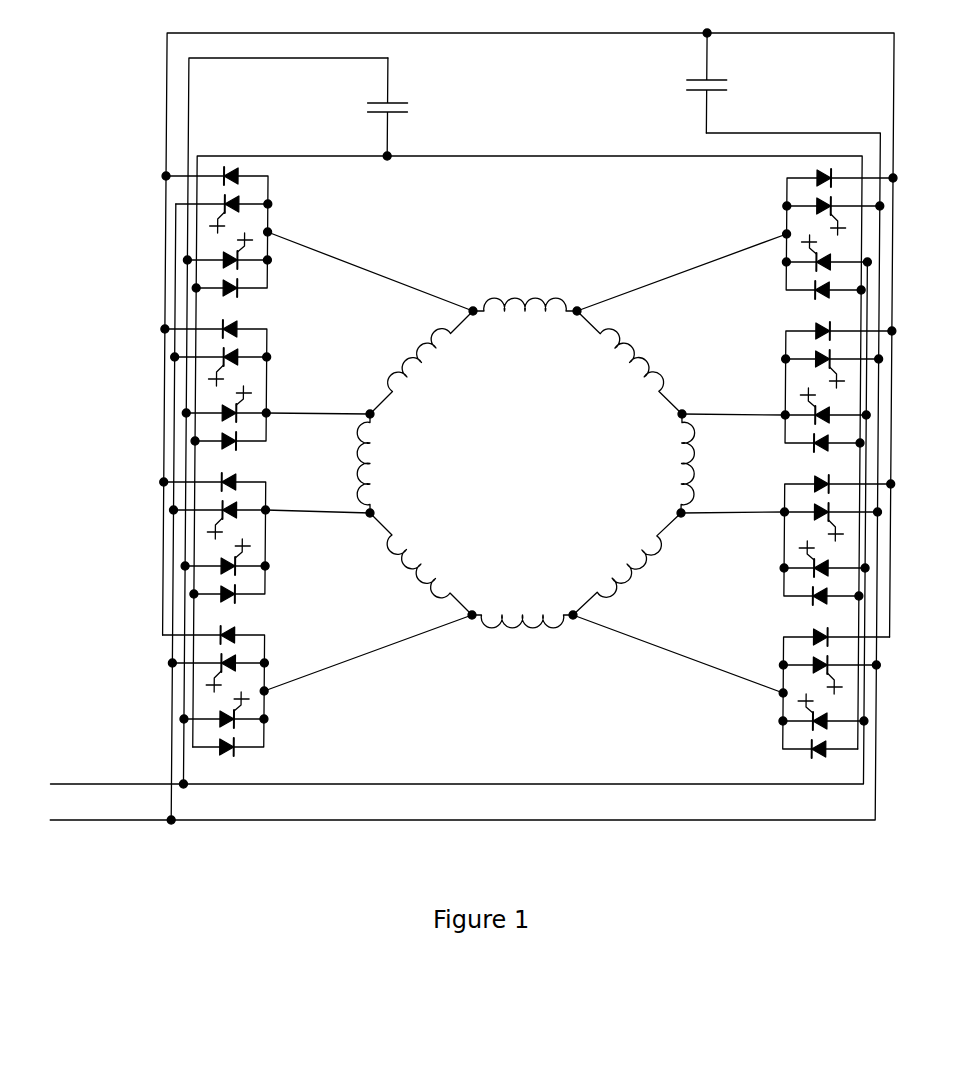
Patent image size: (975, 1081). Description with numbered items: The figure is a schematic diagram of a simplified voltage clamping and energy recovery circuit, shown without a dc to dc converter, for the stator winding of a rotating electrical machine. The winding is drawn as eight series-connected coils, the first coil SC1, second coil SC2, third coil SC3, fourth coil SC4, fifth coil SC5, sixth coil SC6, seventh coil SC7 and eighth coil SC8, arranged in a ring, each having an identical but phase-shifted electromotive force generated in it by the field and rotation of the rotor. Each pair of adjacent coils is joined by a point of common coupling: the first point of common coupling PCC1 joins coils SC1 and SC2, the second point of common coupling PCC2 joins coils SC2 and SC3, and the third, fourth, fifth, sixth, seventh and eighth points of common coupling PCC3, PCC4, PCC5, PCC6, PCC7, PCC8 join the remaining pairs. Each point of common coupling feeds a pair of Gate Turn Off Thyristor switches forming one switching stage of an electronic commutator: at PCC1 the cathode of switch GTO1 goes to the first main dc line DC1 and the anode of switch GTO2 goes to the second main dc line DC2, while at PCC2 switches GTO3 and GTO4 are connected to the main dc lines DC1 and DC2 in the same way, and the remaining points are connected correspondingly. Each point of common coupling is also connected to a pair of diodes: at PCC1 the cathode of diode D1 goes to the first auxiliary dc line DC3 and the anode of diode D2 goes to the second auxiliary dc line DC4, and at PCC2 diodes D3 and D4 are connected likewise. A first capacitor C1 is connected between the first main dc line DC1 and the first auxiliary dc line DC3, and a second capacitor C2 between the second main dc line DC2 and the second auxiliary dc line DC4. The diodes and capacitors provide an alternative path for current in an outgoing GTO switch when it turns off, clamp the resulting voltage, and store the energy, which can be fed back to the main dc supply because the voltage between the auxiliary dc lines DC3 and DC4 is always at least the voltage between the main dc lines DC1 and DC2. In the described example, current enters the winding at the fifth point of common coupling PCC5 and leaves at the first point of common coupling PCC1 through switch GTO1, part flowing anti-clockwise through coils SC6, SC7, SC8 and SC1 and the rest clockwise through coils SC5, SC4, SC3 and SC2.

The first main dc line DC1 is at (467, 480).
The second main dc line DC2 is at (461, 423).
The first auxiliary dc line DC3 is at (529, 333).
The second auxiliary dc line DC4 is at (527, 450).
The first capacitor C1 is at (715, 83).
The second capacitor C2 is at (396, 107).
The first coil SC1 is at (522, 604).
The second coil SC2 is at (626, 564).
The third coil SC3 is at (660, 463).
The fourth coil SC4 is at (629, 362).
The fifth coil SC5 is at (525, 319).
The sixth coil SC6 is at (422, 362).
The seventh coil SC7 is at (396, 463).
The eighth coil SC8 is at (423, 564).
The first point of common coupling PCC1 is at (565, 631).
The second point of common coupling PCC2 is at (696, 531).
The third point of common coupling PCC3 is at (694, 396).
The fourth point of common coupling PCC4 is at (581, 293).
The fifth point of common coupling PCC5 is at (453, 312).
The sixth point of common coupling PCC6 is at (359, 400).
The seventh point of common coupling PCC7 is at (357, 532).
The eighth point of common coupling PCC8 is at (449, 615).
The diode D1 is at (798, 630).
The diode D2 is at (839, 759).
The diode D3 is at (805, 475).
The diode D4 is at (798, 588).
The Gate Turn Off Thyristor switch GTO1 is at (798, 656).
The Gate Turn Off Thyristor switch GTO2 is at (797, 735).
The Gate Turn Off Thyristor switch GTO3 is at (801, 504).
The Gate Turn Off Thyristor switch GTO4 is at (800, 554).